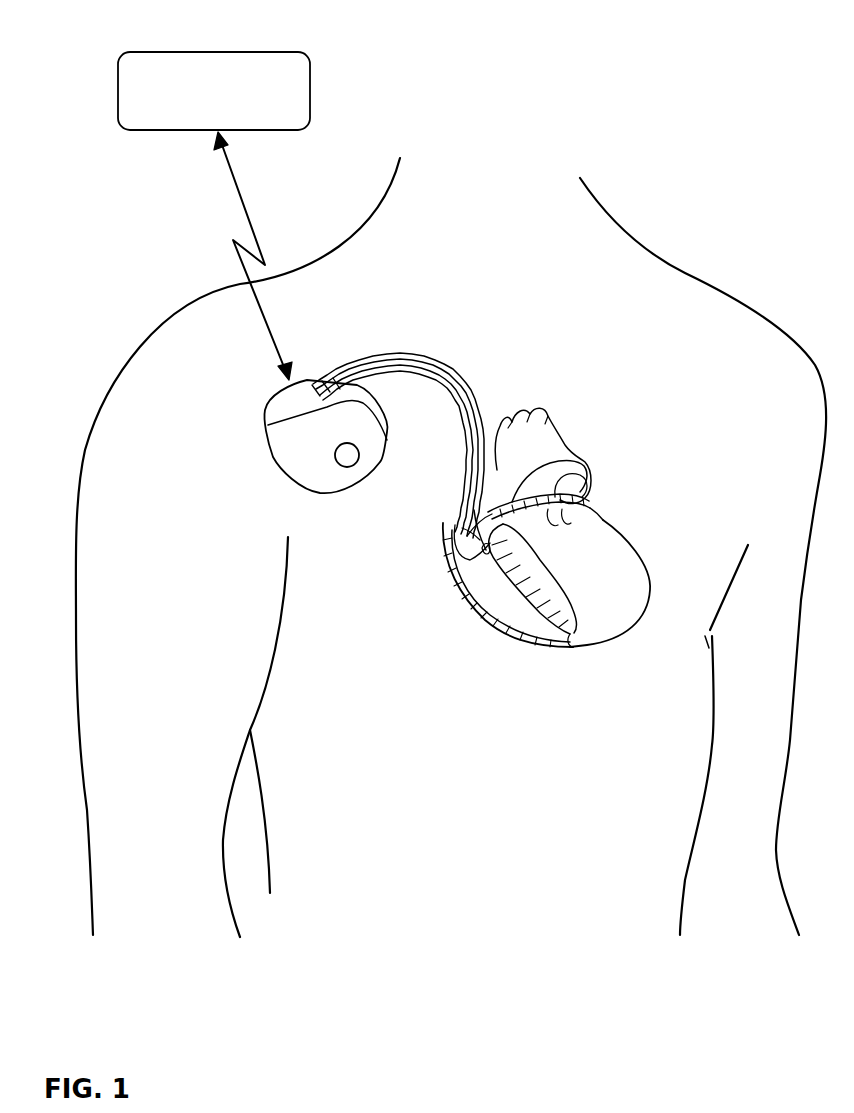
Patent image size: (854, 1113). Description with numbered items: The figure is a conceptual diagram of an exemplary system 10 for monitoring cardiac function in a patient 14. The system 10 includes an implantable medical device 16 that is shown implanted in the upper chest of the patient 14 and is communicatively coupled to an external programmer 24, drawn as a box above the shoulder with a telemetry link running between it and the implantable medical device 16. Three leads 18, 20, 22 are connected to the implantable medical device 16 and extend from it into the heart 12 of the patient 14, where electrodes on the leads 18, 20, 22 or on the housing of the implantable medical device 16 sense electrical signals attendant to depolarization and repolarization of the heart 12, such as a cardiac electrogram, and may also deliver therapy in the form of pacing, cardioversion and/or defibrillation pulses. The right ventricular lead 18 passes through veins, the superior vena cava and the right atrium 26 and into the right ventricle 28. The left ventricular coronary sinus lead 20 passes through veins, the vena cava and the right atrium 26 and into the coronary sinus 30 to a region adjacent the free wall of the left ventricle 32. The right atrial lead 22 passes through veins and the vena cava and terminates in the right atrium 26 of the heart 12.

The system 10 is at (647, 66).
The heart 12 is at (528, 563).
The patient 14 is at (685, 273).
The implantable medical device 16 is at (277, 459).
The right ventricular lead 18 is at (443, 373).
The left ventricular coronary sinus lead 20 is at (484, 390).
The right atrial lead 22 is at (462, 408).
The programmer 24 is at (204, 113).
The right atrium 26 is at (455, 543).
The right ventricle 28 is at (495, 603).
The coronary sinus 30 is at (512, 507).
The left ventricle 32 is at (612, 556).